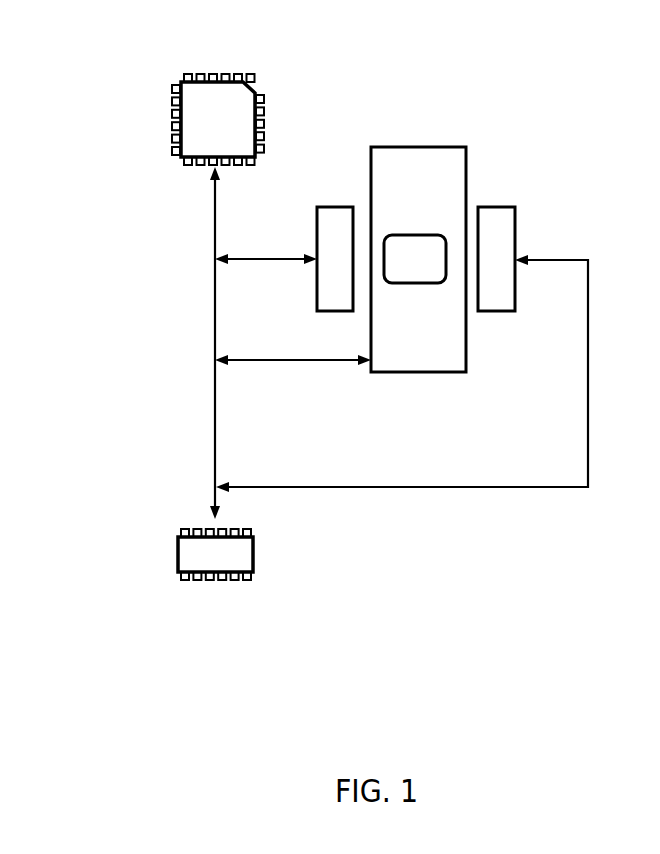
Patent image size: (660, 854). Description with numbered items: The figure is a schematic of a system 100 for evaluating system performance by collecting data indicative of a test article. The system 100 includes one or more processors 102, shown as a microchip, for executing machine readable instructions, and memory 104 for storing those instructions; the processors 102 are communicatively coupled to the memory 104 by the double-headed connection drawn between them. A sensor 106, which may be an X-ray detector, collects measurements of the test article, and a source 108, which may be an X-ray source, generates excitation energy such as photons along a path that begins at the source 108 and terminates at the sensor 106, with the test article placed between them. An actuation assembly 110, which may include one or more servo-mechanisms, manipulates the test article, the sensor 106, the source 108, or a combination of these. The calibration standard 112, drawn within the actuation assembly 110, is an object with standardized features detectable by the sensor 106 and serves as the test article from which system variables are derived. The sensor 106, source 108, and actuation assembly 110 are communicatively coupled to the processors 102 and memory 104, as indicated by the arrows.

The system 100 is at (108, 97).
The processors 102 is at (247, 84).
The memory 104 is at (178, 553).
The sensor 106 is at (495, 206).
The source 108 is at (337, 206).
The actuation assembly 110 is at (425, 146).
The calibration standard 112 is at (415, 234).